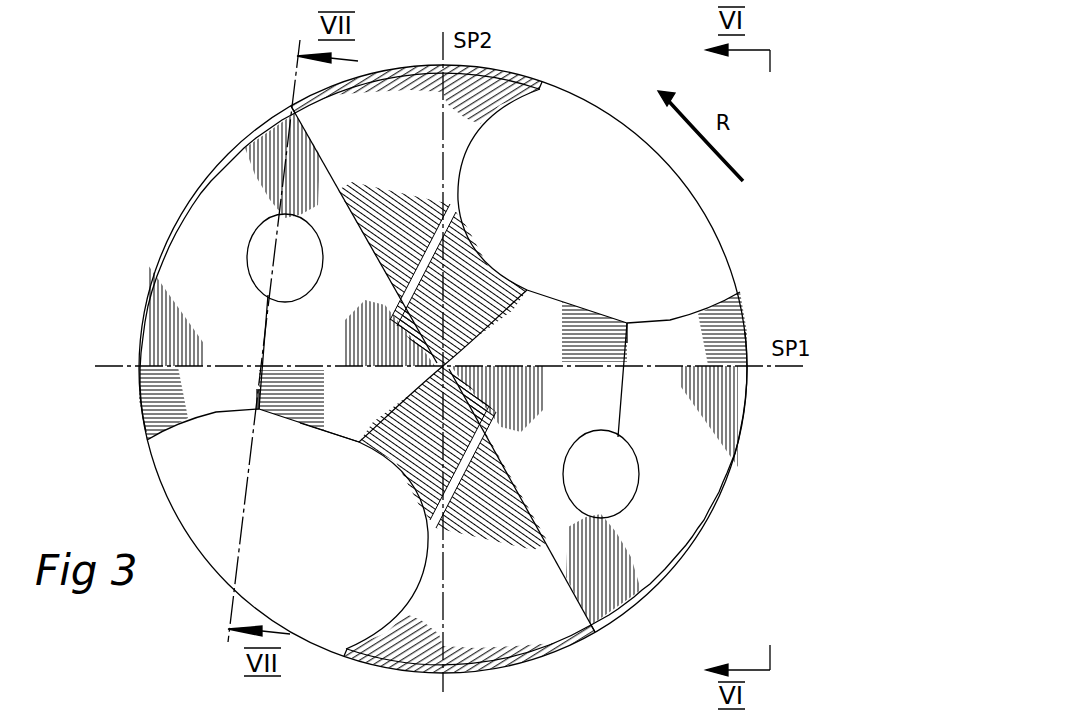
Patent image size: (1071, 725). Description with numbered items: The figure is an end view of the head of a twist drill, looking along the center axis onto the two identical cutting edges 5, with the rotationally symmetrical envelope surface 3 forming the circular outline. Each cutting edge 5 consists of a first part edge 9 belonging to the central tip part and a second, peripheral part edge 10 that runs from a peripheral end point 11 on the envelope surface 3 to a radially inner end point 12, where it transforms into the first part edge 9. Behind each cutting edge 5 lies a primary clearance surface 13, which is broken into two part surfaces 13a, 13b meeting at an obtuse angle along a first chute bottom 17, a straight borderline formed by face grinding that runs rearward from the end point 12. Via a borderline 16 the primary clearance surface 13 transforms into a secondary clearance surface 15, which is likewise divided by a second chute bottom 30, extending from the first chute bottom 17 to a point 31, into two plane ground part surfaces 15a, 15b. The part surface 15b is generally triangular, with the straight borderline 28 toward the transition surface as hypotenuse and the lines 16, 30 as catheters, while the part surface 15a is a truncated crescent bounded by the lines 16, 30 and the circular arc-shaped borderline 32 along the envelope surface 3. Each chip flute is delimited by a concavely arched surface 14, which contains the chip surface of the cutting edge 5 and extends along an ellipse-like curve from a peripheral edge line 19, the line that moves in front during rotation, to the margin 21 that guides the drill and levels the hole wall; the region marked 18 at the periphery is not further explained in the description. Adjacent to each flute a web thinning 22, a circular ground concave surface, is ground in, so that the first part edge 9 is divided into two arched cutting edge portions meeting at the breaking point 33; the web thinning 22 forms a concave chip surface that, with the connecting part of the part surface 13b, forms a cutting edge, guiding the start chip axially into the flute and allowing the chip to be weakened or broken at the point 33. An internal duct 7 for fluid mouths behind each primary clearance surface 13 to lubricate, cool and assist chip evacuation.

The envelope surface 3 is at (167, 263).
The cutting edge 5 is at (552, 280).
The internal duct 7 is at (262, 264).
The first part edge 9 is at (322, 428).
The second part edge 10 is at (673, 318).
The peripheral end point 11 is at (146, 443).
The radially inner end point 12 is at (257, 408).
The primary clearance surface 13 is at (147, 411).
The first part surface of primary clearance surface 13a is at (190, 399).
The second part surface of primary clearance surface 13b is at (327, 406).
The chip flute delimitation surface 14 is at (423, 556).
The secondary clearance surface 15 is at (207, 220).
The first part surface of secondary clearance surface 15a is at (197, 309).
The second part surface of secondary clearance surface 15b is at (325, 292).
The borderline 16 is at (298, 365).
The first chute bottom 17 is at (264, 386).
The margin face 18 is at (150, 337).
The peripheral edge line 19 is at (348, 640).
The margin 21 is at (143, 421).
The web thinning 22 is at (413, 447).
The borderline 28 is at (317, 153).
The second chute bottom 30 is at (283, 163).
The point 31 is at (294, 108).
The circular arc-shaped borderline 32 is at (217, 173).
The breaking point 33 is at (357, 441).